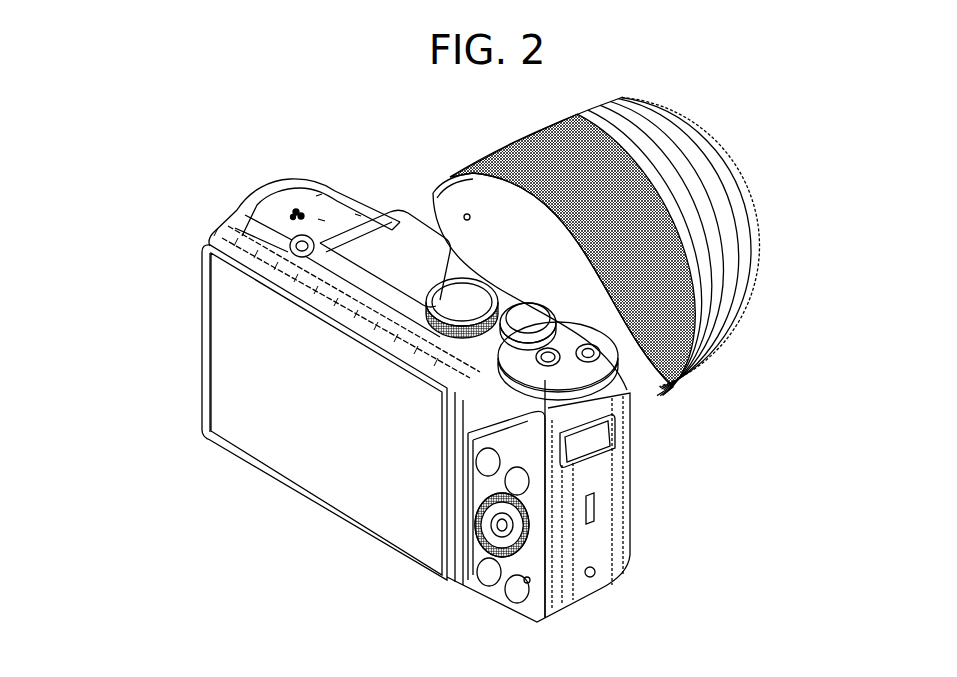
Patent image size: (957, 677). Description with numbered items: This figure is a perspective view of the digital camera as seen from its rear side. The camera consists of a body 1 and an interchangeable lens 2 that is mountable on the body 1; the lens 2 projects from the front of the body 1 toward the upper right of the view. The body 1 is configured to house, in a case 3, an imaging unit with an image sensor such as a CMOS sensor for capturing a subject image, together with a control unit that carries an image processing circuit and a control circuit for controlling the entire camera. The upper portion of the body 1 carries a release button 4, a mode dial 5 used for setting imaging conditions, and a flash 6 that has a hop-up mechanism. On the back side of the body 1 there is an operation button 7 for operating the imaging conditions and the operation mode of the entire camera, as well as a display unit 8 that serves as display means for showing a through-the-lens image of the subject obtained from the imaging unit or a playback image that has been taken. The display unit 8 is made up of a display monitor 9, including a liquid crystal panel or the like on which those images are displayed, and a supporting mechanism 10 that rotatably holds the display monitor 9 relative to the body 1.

The body 1 is at (290, 190).
The interchangeable lens 2 is at (643, 120).
The case 3 is at (620, 532).
The release button 4 is at (535, 320).
The mode dial 5 is at (463, 293).
The flash 6 is at (403, 255).
The operation button 7 is at (500, 527).
The display unit 8 is at (263, 475).
The display monitor 9 is at (238, 371).
The supporting mechanism 10 is at (225, 253).